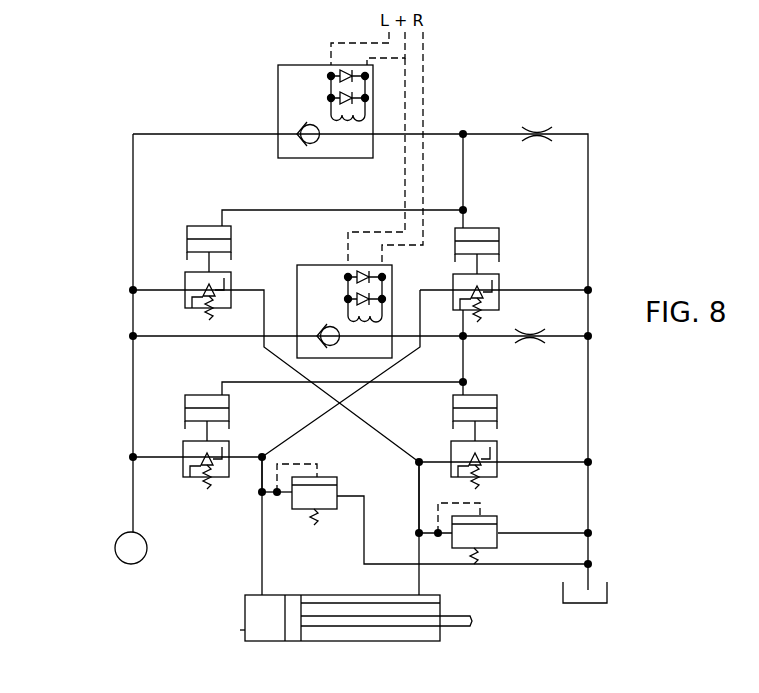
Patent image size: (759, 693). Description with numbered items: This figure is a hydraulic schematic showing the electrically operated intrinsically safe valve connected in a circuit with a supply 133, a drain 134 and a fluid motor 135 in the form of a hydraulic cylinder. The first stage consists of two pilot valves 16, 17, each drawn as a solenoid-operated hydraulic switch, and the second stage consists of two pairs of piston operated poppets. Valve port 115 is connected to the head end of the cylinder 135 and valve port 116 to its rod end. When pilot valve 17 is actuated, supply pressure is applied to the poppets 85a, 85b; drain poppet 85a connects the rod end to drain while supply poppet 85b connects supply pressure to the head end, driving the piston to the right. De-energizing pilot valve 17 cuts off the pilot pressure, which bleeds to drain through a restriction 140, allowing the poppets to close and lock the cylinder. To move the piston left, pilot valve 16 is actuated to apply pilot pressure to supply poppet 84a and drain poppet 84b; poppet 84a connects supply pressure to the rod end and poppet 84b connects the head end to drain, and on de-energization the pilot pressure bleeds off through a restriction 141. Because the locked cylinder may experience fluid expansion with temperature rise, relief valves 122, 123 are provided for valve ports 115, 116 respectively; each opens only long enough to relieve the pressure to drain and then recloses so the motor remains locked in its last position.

The pilot valve 16 is at (278, 100).
The pilot valve 17 is at (306, 262).
The supply poppet 84a is at (186, 241).
The drain poppet 84b is at (499, 238).
The drain poppet 85a is at (498, 417).
The supply poppet 85b is at (185, 414).
The valve port 115 is at (262, 452).
The valve port 116 is at (419, 457).
The relief valve 122 is at (322, 486).
The relief valve 123 is at (489, 512).
The supply 133 is at (115, 549).
The drain 134 is at (609, 588).
The fluid motor 135 is at (244, 631).
The restriction 140 is at (528, 333).
The restriction 141 is at (536, 130).